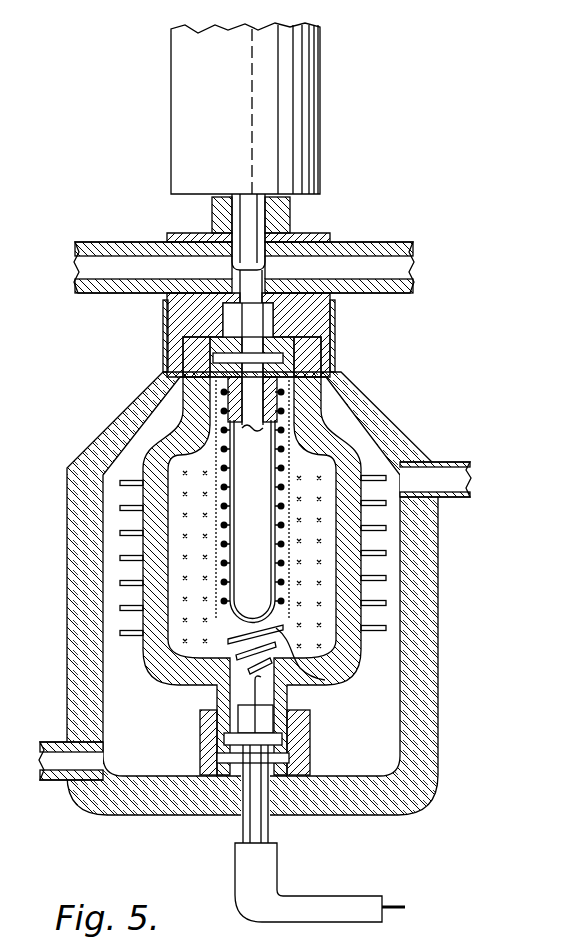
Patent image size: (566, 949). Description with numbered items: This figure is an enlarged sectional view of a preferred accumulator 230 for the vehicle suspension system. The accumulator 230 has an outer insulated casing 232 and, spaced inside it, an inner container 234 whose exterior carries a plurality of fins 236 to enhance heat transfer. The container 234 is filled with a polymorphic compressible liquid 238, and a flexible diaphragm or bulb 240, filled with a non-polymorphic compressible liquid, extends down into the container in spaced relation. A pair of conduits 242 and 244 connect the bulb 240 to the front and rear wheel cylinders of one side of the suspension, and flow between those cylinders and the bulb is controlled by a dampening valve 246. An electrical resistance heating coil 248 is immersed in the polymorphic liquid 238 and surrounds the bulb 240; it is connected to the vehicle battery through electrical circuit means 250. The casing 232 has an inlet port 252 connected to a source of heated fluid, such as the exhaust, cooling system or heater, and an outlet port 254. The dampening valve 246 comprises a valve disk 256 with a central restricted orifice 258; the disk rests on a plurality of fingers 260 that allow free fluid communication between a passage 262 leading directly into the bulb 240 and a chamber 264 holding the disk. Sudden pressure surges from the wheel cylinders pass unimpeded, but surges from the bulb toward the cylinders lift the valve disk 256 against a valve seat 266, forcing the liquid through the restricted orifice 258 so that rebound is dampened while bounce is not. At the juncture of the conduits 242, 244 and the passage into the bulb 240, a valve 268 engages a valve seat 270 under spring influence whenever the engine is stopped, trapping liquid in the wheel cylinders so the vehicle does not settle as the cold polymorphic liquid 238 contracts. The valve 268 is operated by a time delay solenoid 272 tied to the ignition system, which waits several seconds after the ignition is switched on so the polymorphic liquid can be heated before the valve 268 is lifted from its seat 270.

The accumulator 230 is at (227, 616).
The outer insulated casing 232 is at (400, 796).
The inner container 234 is at (168, 665).
The fins 236 is at (200, 562).
The polymorphic compressible liquid 238 is at (128, 579).
The flexible diaphragm or bulb 240 is at (181, 568).
The conduit 242 is at (138, 268).
The conduit 244 is at (386, 262).
The dampening valve 246 is at (332, 347).
The electrical resistance heating coil 248 is at (318, 667).
The electrical circuit means 250 is at (291, 893).
The inlet port 252 is at (55, 748).
The outlet port 254 is at (456, 484).
The valve disk 256 is at (338, 338).
The central restricted orifice 258 is at (334, 322).
The fingers 260 is at (332, 360).
The passage 262 is at (256, 416).
The chamber 264 is at (188, 360).
The valve seat 266 is at (198, 343).
The valve 268 is at (248, 262).
The valve seat 270 is at (270, 262).
The time delay solenoid 272 is at (312, 100).